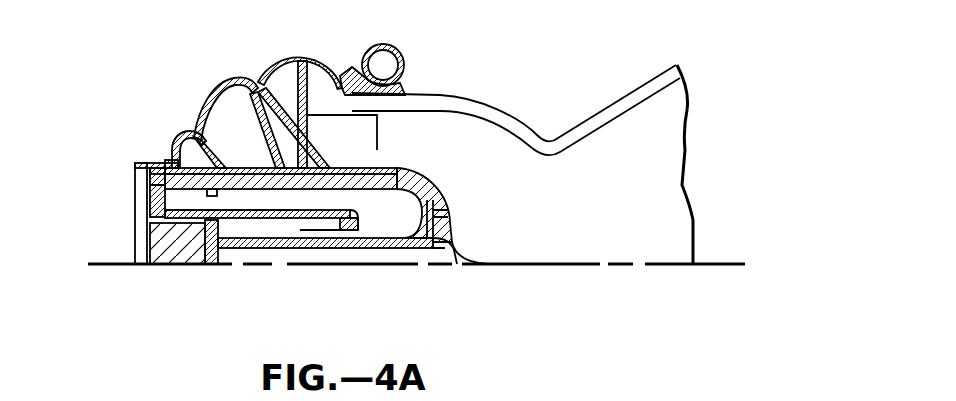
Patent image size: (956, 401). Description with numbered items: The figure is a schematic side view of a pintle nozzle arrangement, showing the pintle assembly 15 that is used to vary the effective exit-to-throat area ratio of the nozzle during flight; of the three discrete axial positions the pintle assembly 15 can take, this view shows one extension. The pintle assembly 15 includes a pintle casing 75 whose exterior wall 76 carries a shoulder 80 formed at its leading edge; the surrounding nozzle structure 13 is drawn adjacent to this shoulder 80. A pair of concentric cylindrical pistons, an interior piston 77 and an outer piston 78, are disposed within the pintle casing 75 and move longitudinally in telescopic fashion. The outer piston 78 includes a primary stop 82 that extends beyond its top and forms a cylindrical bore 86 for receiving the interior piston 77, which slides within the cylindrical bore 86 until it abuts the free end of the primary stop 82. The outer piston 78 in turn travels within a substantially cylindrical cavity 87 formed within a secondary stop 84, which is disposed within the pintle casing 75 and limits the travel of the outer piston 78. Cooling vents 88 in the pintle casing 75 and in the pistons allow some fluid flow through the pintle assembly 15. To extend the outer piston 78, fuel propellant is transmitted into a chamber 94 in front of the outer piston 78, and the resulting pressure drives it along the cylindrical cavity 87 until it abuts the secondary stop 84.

The housing wall 13 is at (625, 92).
The pintle assembly 15 is at (407, 278).
The pintle casing 75 is at (162, 170).
The exterior wall 76 is at (303, 168).
The interior piston 77 is at (211, 255).
The outer piston 78 is at (165, 203).
The shoulder 80 is at (446, 212).
The primary stop 82 is at (310, 233).
The secondary stop 84 is at (405, 192).
The cylindrical bore 86 is at (333, 250).
The cylindrical cavity 87 is at (255, 202).
The cooling vents 88 is at (450, 207).
The chamber 94 is at (178, 247).